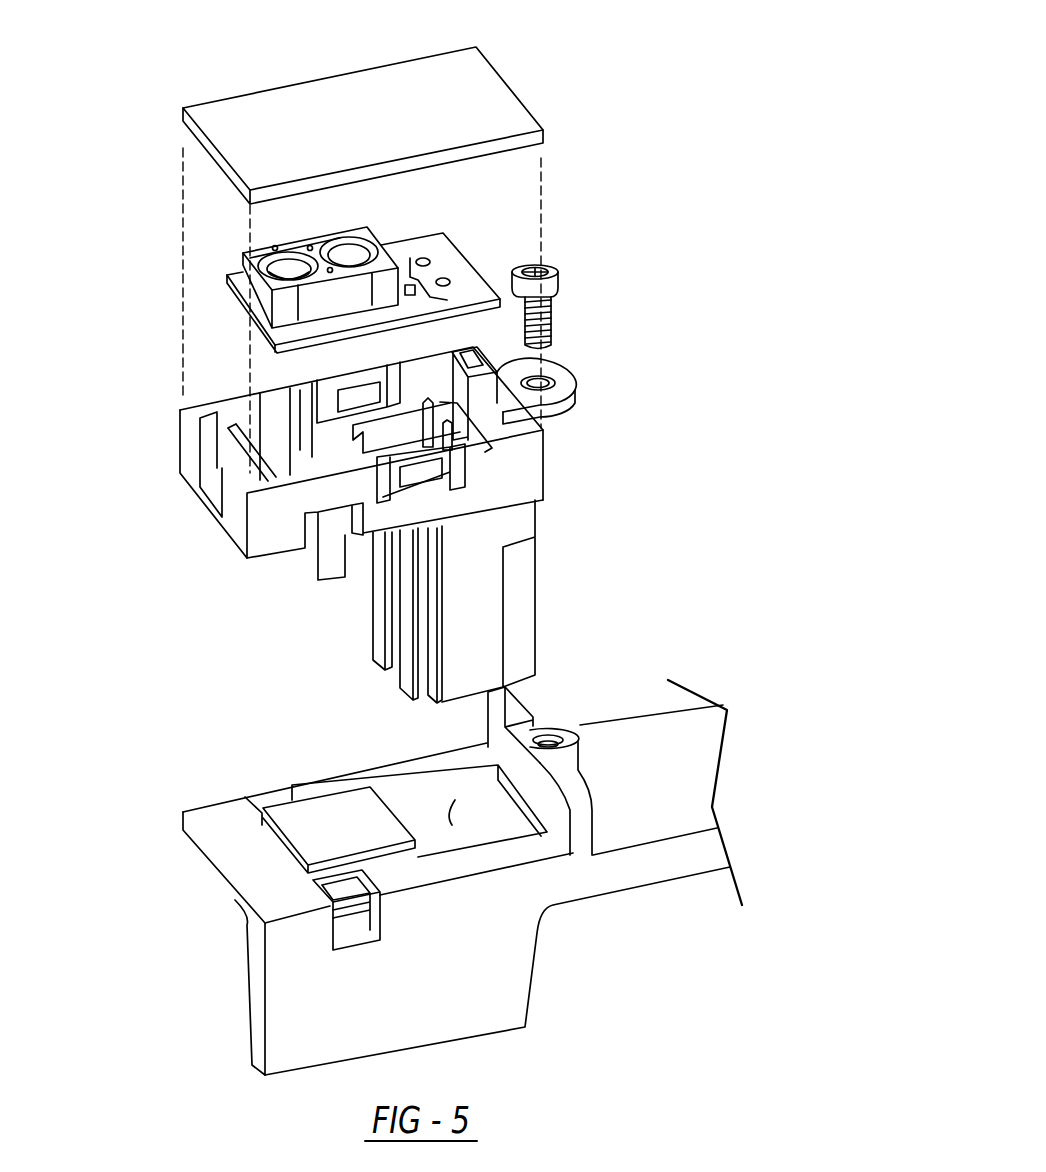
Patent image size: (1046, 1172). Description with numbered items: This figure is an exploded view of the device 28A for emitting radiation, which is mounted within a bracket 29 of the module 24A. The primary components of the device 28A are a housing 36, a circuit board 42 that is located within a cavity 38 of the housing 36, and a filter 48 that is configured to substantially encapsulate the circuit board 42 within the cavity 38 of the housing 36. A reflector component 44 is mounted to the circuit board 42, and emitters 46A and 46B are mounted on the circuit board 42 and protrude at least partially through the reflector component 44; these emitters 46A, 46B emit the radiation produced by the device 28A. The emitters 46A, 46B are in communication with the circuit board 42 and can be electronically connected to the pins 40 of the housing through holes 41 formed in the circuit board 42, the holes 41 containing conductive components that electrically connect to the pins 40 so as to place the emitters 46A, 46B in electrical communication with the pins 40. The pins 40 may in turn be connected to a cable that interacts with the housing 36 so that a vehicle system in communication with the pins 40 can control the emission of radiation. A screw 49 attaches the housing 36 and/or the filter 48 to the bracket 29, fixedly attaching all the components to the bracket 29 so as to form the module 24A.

The filter 48 is at (483, 97).
The emitter 46A is at (288, 277).
The emitter 46B is at (345, 262).
The circuit board 42 is at (460, 265).
The reflector component 44 is at (300, 282).
The screw 49 is at (558, 283).
The cavity 38 is at (480, 397).
The device 28A is at (668, 396).
The holes 41 is at (413, 290).
The pins 40 is at (460, 418).
The housing 36 is at (518, 520).
The module 24A is at (698, 734).
The bracket 29 is at (678, 793).